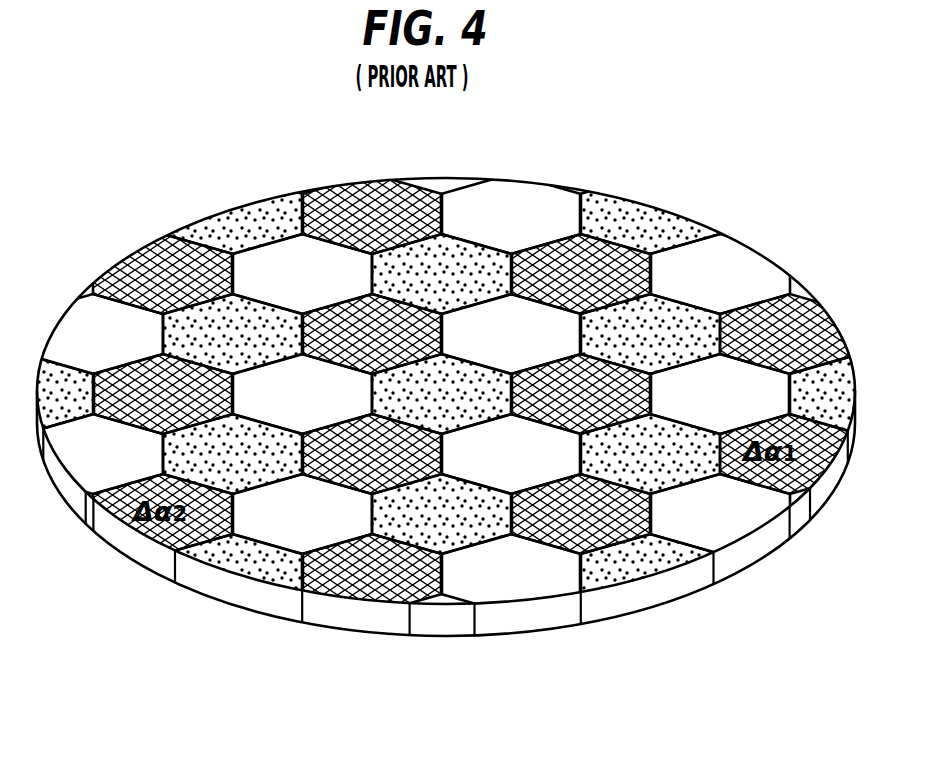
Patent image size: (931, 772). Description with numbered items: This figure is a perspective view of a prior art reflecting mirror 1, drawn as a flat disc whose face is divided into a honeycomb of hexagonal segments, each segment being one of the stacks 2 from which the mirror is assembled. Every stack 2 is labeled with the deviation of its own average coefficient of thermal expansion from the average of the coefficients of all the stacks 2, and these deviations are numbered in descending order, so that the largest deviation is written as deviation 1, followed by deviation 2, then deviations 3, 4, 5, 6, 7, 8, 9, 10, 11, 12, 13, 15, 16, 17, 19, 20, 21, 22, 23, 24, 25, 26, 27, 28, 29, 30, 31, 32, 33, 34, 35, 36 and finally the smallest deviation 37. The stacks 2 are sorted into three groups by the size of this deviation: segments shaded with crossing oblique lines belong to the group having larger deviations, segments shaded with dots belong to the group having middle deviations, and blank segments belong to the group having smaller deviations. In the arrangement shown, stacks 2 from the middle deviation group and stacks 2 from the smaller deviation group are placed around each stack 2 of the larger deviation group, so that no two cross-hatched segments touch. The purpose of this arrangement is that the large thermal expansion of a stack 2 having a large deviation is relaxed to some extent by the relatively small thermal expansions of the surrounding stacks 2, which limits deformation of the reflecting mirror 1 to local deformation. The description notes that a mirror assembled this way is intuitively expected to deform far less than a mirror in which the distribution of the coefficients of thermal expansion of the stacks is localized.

The reflecting mirror 1 is at (516, 643).
The stacks 2 is at (454, 248).
The average CTE deviation 3 is at (372, 214).
The average CTE deviation 4 is at (116, 334).
The average CTE deviation 5 is at (372, 574).
The average CTE deviation 6 is at (790, 334).
The average CTE deviation 7 is at (581, 274).
The average CTE deviation 8 is at (581, 514).
The average CTE deviation 9 is at (163, 394).
The average CTE deviation 10 is at (372, 454).
The average CTE deviation 11 is at (581, 394).
The average CTE deviation 12 is at (372, 334).
The average CTE deviation 13 is at (650, 574).
The average CTE deviation 15 is at (650, 214).
The average CTE deviation 16 is at (233, 454).
The average CTE deviation 17 is at (650, 454).
The average CTE deviation 19 is at (442, 394).
The average CTE deviation 20 is at (650, 334).
The average CTE deviation 21 is at (442, 514).
The average CTE deviation 22 is at (233, 334).
The average CTE deviation 23 is at (233, 214).
The average CTE deviation 24 is at (233, 574).
The average CTE deviation 25 is at (859, 394).
The average CTE deviation 26 is at (511, 334).
The average CTE deviation 27 is at (511, 454).
The average CTE deviation 28 is at (302, 394).
The average CTE deviation 29 is at (302, 274).
The average CTE deviation 30 is at (302, 514).
The average CTE deviation 31 is at (720, 394).
The average CTE deviation 32 is at (720, 514).
The average CTE deviation 33 is at (93, 454).
The average CTE deviation 34 is at (511, 214).
The average CTE deviation 35 is at (720, 274).
The average CTE deviation 36 is at (93, 334).
The average CTE deviation 37 is at (511, 574).